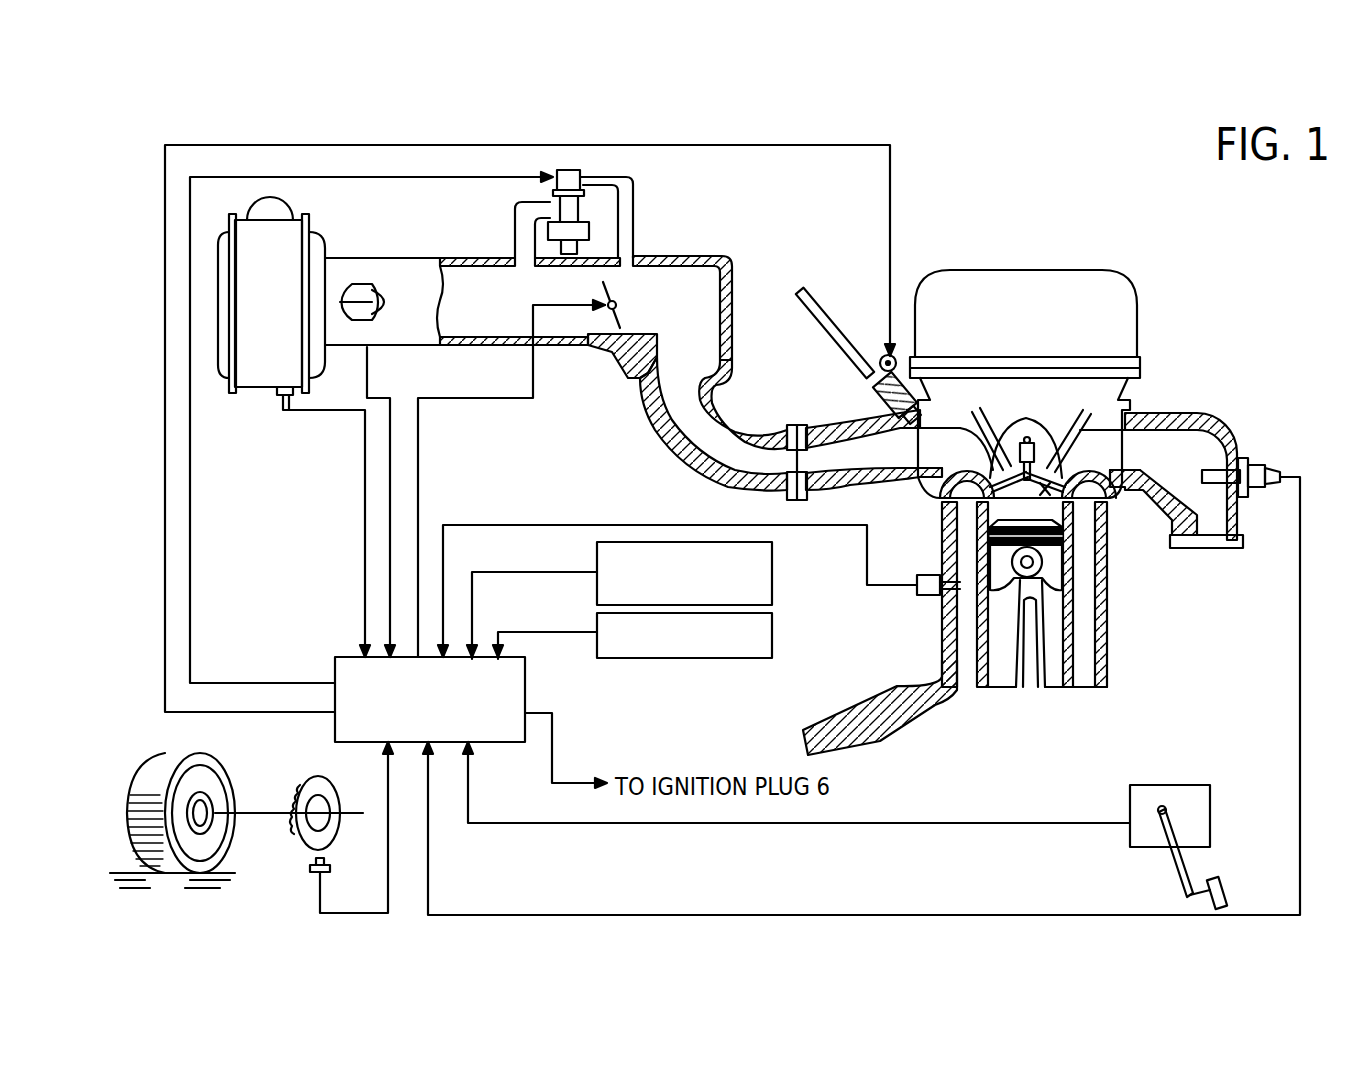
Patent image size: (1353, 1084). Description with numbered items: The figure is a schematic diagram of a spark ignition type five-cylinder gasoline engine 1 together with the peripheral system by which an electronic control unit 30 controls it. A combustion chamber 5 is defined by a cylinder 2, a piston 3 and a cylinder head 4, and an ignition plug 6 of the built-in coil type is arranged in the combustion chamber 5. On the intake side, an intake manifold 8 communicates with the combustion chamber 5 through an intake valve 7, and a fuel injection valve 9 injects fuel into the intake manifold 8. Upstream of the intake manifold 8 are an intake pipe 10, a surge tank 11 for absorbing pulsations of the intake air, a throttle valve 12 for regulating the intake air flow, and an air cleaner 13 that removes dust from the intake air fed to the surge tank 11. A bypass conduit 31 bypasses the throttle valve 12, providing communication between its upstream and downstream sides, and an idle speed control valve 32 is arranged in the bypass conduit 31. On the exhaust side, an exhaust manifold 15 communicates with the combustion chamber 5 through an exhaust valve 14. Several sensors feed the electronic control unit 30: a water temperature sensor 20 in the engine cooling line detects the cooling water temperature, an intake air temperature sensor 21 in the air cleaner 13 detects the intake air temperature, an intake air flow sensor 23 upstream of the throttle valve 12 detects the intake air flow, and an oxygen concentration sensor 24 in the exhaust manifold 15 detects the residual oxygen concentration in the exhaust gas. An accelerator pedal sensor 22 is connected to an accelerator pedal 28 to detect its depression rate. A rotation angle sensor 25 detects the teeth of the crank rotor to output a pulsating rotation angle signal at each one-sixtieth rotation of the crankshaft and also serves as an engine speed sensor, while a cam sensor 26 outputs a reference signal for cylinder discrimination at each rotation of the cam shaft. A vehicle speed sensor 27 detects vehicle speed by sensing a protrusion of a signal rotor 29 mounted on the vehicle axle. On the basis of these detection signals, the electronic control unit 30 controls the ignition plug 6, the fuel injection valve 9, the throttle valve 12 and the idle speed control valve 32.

The engine 1 is at (1066, 238).
The cylinder 2 is at (1057, 670).
The piston 3 is at (1058, 565).
The cylinder head 4 is at (1078, 380).
The combustion chamber 5 is at (1076, 512).
The ignition plug 6 is at (1034, 444).
The intake valve 7 is at (930, 477).
The intake manifold 8 is at (868, 462).
The fuel injection valve 9 is at (880, 357).
The intake pipe 10 is at (710, 462).
The surge tank 11 is at (740, 296).
The throttle valve 12 is at (618, 305).
The air cleaner 13 is at (250, 388).
The exhaust valve 14 is at (1095, 448).
The exhaust manifold 15 is at (1212, 440).
The water temperature sensor 20 is at (927, 575).
The intake air temperature sensor 21 is at (285, 410).
The accelerator pedal sensor 22 is at (1190, 785).
The intake air flow sensor 23 is at (358, 288).
The oxygen concentration sensor 24 is at (1275, 470).
The rotation angle sensor 25 is at (773, 568).
The cam sensor 26 is at (773, 638).
The vehicle speed sensor 27 is at (332, 869).
The accelerator pedal 28 is at (1225, 891).
The signal rotor 29 is at (312, 778).
The electronic control unit 30 is at (500, 745).
The bypass conduit 31 is at (518, 212).
The idle speed control valve 32 is at (572, 170).